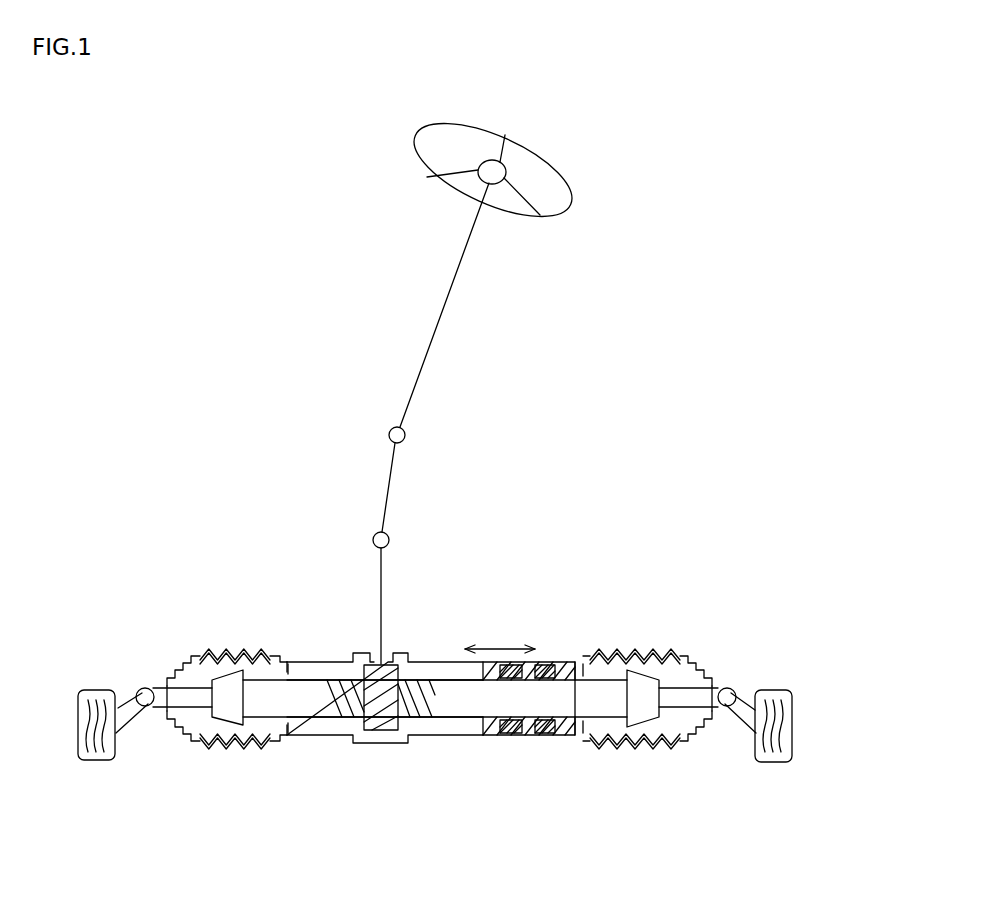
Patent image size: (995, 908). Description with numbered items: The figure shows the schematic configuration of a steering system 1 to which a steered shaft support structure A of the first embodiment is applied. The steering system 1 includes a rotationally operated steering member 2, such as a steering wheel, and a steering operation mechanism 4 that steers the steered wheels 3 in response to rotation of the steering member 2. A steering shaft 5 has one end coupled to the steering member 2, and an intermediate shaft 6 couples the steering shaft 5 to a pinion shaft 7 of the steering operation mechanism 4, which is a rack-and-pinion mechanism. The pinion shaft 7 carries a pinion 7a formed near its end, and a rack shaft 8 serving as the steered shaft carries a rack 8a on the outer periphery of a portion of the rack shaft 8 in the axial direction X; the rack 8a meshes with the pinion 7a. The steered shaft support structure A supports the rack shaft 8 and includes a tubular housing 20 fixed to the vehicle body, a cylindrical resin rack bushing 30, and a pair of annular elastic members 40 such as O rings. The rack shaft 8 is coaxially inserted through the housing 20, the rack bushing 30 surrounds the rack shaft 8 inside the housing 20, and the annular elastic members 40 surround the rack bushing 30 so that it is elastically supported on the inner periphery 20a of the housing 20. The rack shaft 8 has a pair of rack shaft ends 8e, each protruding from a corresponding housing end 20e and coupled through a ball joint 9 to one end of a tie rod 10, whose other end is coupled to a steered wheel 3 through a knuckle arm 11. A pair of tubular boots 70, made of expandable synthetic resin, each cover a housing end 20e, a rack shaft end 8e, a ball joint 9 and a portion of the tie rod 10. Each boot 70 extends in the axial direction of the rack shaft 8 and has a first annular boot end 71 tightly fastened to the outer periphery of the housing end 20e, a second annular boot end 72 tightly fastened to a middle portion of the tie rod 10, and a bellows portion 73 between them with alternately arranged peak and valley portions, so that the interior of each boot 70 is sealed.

The steering system 1 is at (560, 124).
The steering member 2 is at (473, 125).
The steered wheels 3 is at (98, 760).
The steering operation mechanism 4 is at (362, 742).
The steering shaft 5 is at (435, 328).
The intermediate shaft 6 is at (390, 487).
The pinion shaft 7 is at (378, 585).
The pinion 7a is at (381, 732).
The rack shaft 8 is at (322, 720).
The rack 8a is at (415, 712).
The rack shaft ends 8e is at (250, 716).
The ball joints 9 is at (225, 680).
The tie rods 10 is at (160, 689).
The knuckle arms 11 is at (127, 708).
The housing 20 is at (443, 660).
The inner periphery 20a is at (460, 730).
The housing ends 20e is at (310, 660).
The rack bushing 30 is at (560, 663).
The annular elastic members 40 is at (545, 737).
The boots 70 is at (258, 648).
The first annular boot end 71 is at (285, 745).
The second annular boot end 72 is at (170, 712).
The bellows portion 73 is at (213, 742).
The axial direction X is at (500, 647).
The steered shaft support structure A is at (550, 757).